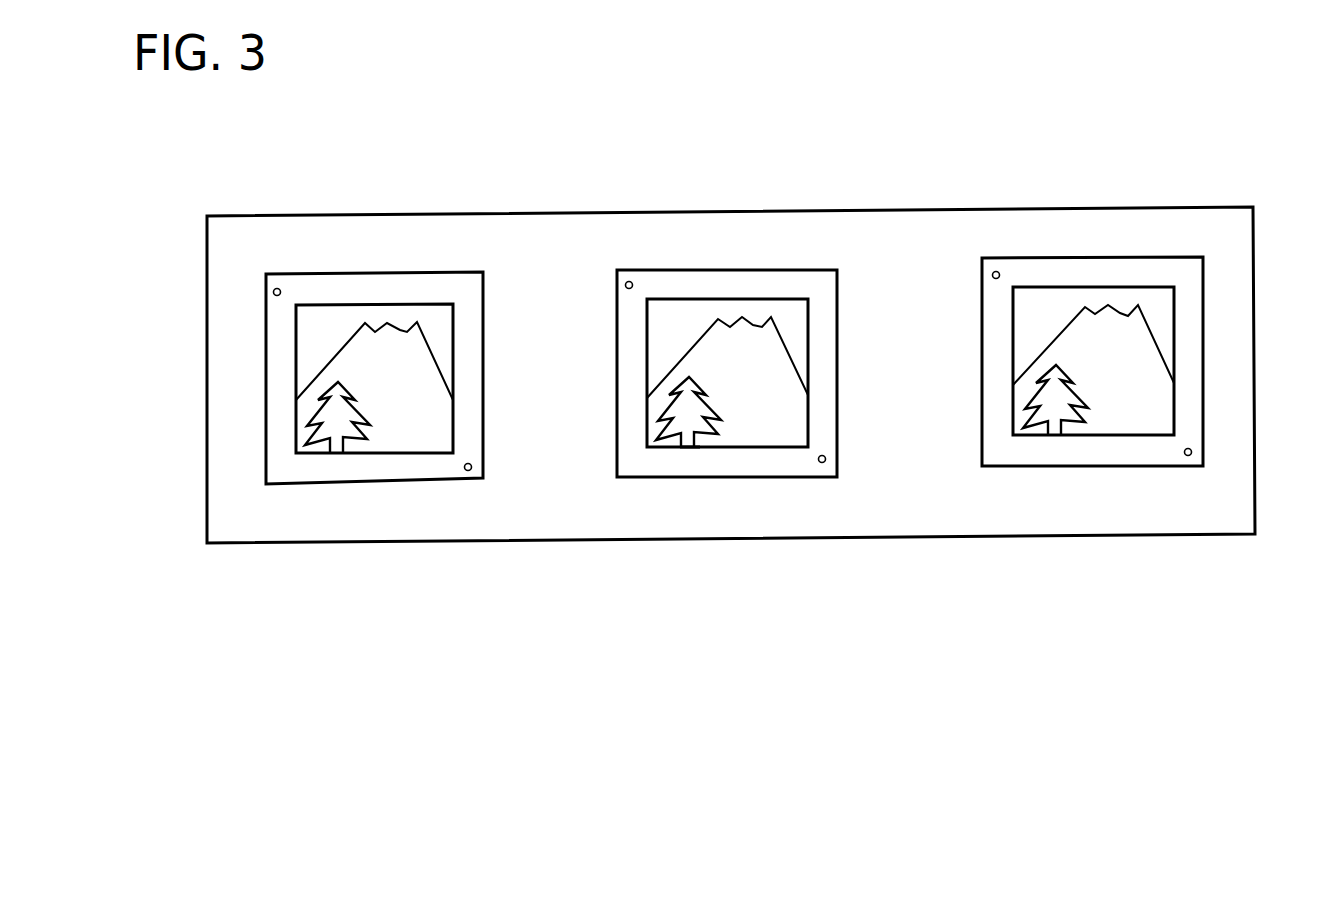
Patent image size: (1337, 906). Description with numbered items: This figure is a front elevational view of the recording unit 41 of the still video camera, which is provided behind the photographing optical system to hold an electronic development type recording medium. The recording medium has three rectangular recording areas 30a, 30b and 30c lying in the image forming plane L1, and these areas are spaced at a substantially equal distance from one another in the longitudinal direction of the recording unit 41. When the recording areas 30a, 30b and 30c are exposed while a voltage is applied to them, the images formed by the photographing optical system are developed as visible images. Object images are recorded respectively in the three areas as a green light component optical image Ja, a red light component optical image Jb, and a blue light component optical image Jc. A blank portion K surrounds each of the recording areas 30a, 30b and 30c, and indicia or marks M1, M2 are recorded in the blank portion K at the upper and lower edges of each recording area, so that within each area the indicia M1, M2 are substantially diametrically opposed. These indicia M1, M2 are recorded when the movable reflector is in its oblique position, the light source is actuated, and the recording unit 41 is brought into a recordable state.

The recording unit 41 is at (932, 218).
The recording area 30a is at (745, 268).
The recording area 30b is at (403, 274).
The recording area 30c is at (1120, 257).
The indicium M1 is at (277, 288).
The indicium M2 is at (472, 470).
The green light component optical image Ja is at (385, 440).
The red light component optical image Jb is at (752, 438).
The blue light component optical image Jc is at (1122, 423).
The blank portion K is at (425, 468).
The image forming plane L1 is at (715, 437).